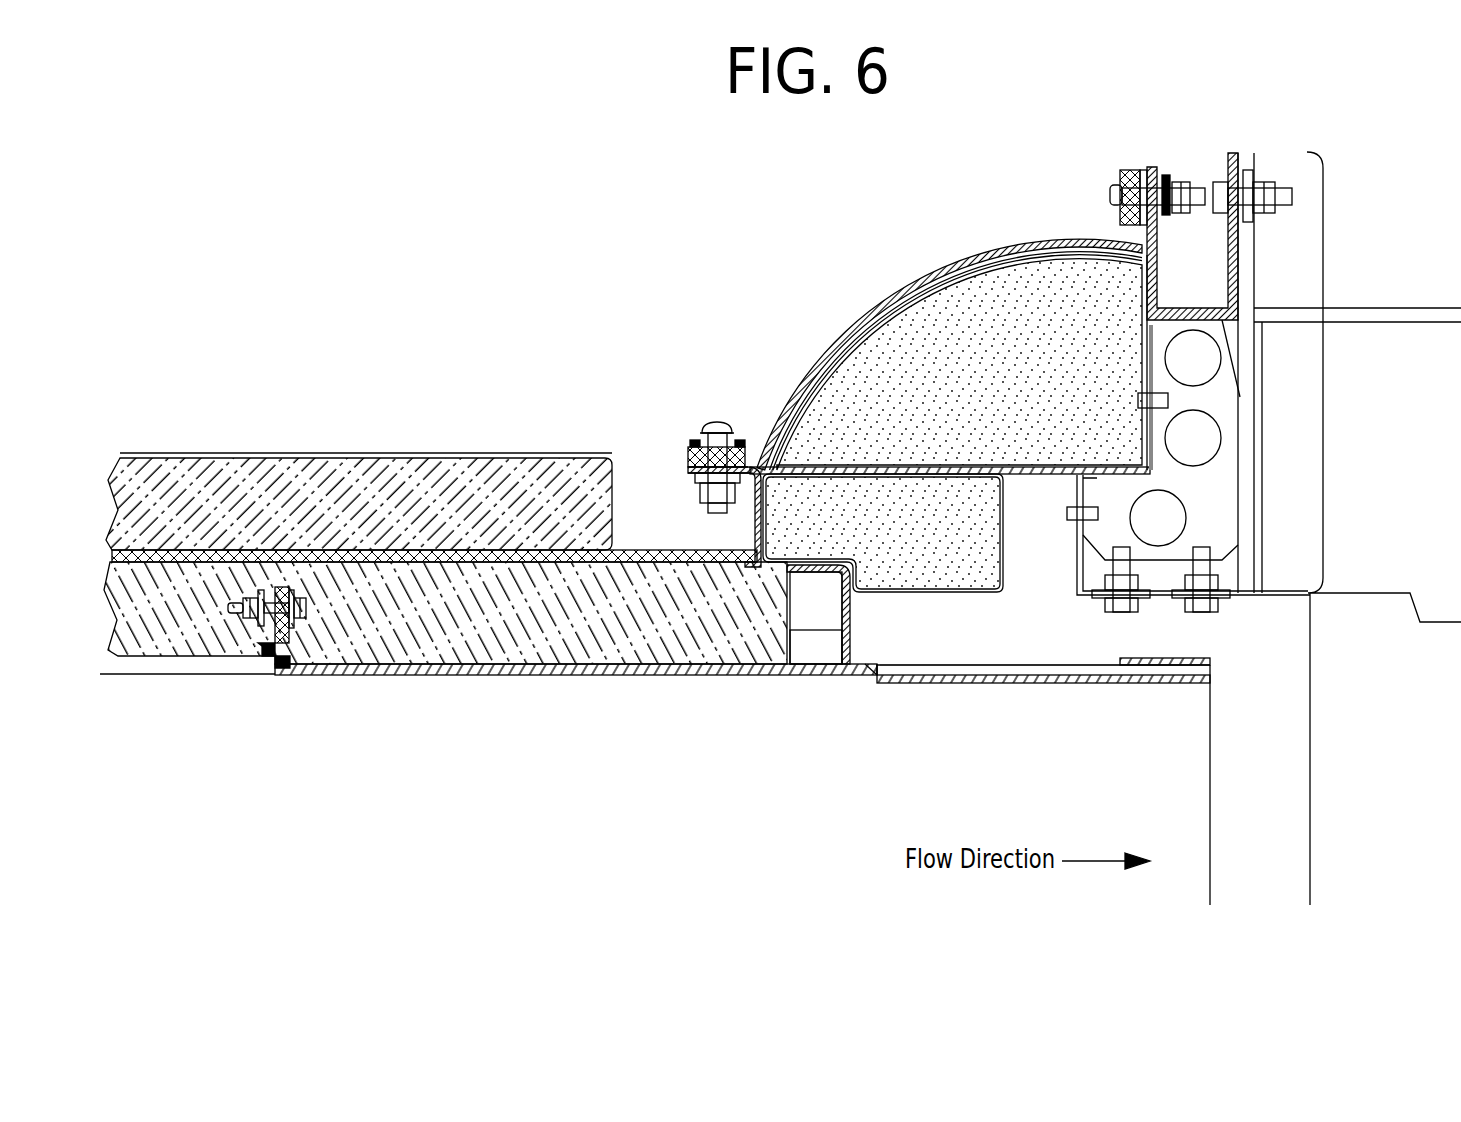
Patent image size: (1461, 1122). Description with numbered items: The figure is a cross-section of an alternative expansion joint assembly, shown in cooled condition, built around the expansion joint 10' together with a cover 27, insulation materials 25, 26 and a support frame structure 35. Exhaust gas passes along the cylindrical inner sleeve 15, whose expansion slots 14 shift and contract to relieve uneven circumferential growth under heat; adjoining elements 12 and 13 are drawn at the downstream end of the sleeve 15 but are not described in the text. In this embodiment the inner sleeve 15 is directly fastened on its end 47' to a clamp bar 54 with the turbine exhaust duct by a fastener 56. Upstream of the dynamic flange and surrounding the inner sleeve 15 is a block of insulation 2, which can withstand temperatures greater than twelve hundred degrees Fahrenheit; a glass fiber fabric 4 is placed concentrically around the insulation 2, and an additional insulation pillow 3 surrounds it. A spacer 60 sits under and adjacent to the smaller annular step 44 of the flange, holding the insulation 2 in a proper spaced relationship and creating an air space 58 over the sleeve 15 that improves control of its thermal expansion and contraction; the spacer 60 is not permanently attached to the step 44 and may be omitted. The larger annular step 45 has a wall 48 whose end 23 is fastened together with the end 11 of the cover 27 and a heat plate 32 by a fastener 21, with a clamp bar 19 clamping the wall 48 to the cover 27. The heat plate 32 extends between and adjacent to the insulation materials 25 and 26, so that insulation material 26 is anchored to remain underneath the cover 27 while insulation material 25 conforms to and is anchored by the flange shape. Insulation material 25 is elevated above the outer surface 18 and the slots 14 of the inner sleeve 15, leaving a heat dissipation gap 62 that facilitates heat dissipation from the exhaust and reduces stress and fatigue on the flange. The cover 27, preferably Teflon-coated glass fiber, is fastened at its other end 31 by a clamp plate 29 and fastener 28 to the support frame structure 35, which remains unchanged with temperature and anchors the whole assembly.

The expansion joint 10' is at (718, 239).
The insulation pillow 3 is at (383, 487).
The glass fiber fabric 4 is at (537, 545).
The block of insulation 2 is at (510, 635).
The clamp bar 54 is at (292, 642).
The end of inner sleeve 47' is at (283, 695).
The fastener 56 is at (310, 606).
The inner sleeve 15 is at (866, 668).
The expansion slots 14 is at (1037, 674).
The end wall 13 is at (1160, 682).
The spacer 12 is at (1170, 662).
The heat dissipation gap 62 is at (965, 636).
The outer surface of inner sleeve 18 is at (870, 657).
The annular step 44 is at (880, 620).
The air gap 58 is at (818, 645).
The spacer 60 is at (803, 633).
The annular step 45 is at (735, 534).
The end of wall 23 is at (700, 470).
The end of cover 11 is at (690, 458).
The clamp bar 19 is at (693, 450).
The fastener 21 is at (717, 445).
The wall of step 48 is at (700, 488).
The cover 27 is at (900, 297).
The insulation material 26 is at (1003, 290).
The heat plate 32 is at (866, 468).
The insulation material 25 is at (975, 540).
The clamp plate 29 is at (1118, 172).
The end of cover 31 is at (1135, 168).
The fastener 28 is at (1110, 195).
The support frame structure 35 is at (1323, 372).